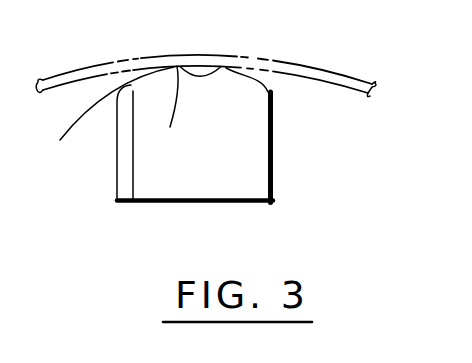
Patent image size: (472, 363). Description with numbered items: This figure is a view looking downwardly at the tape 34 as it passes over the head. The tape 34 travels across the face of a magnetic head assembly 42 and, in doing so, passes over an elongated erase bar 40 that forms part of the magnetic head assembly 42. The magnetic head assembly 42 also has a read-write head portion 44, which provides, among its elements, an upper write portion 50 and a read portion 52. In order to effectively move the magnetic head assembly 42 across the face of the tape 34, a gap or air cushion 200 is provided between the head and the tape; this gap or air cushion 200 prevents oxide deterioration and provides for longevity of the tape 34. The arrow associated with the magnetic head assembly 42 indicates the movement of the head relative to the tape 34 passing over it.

The tape 34 is at (310, 65).
The read-write head portion 44 is at (238, 163).
The elongated erase bar 40 is at (133, 155).
The read portion 52 is at (161, 112).
The upper write portion 50 is at (224, 71).
The gap or air cushion 200 is at (102, 121).
The magnetic head assembly 42 is at (277, 232).